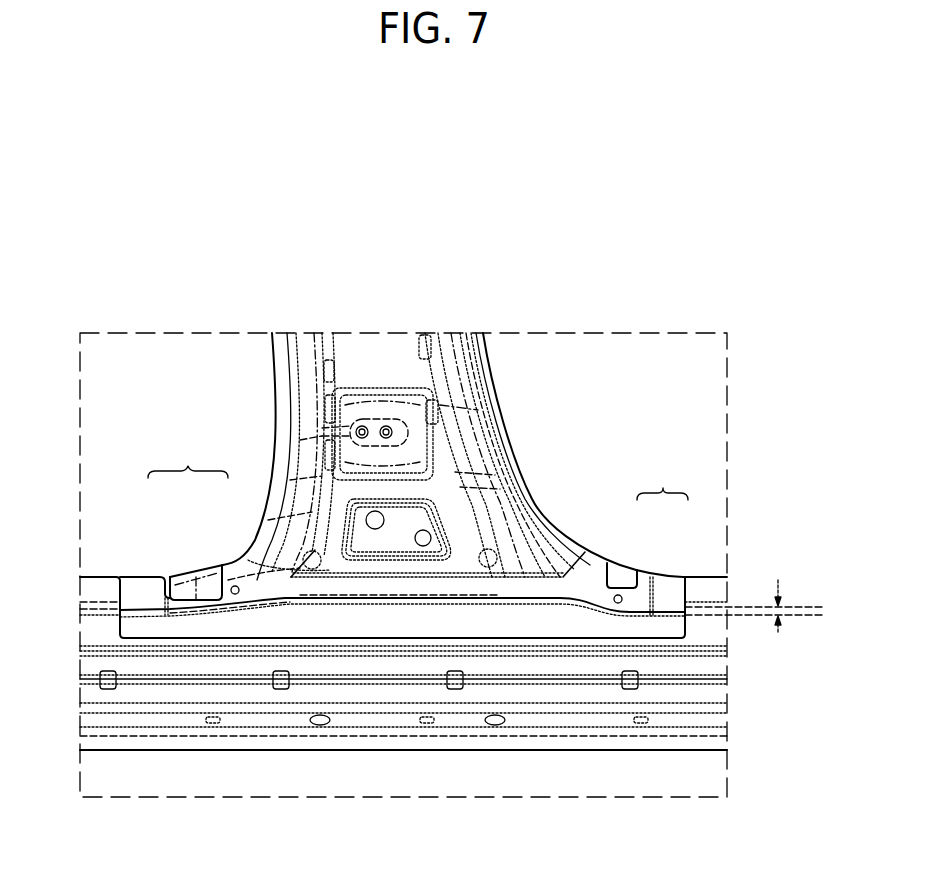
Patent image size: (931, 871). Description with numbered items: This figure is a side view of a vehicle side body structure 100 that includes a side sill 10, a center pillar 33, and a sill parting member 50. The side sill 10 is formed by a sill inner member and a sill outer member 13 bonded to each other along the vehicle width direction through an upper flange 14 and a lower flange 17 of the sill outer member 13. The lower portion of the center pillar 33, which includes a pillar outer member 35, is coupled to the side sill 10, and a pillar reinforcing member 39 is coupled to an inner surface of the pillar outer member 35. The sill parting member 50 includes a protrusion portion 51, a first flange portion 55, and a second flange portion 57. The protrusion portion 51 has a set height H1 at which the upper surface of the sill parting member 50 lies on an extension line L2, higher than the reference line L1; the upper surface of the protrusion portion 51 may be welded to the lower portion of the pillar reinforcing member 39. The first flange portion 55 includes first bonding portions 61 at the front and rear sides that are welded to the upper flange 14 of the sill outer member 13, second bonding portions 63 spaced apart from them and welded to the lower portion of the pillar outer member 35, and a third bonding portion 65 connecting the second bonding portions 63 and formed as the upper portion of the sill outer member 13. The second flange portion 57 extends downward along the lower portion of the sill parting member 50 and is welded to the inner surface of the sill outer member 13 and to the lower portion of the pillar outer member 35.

The vehicle side body structure 100 is at (276, 265).
The pillar outer member 35 is at (467, 378).
The center pillar 33 is at (512, 427).
The pillar reinforcing member 39 is at (372, 490).
The protrusion portion 51 is at (446, 590).
The upper flange 14 is at (102, 572).
The sill parting member 50 is at (110, 626).
The second flange portion 57 is at (413, 620).
The first flange portion 55 is at (418, 470).
The first bonding portion 61 is at (143, 590).
The second bonding portion 63 is at (243, 568).
The third bonding portion 65 is at (350, 588).
The side sill 10 is at (146, 756).
The sill outer member 13 is at (347, 667).
The lower flange 17 is at (213, 754).
The set height H1 is at (778, 591).
The reference line L1 is at (816, 616).
The extension line L2 is at (816, 606).